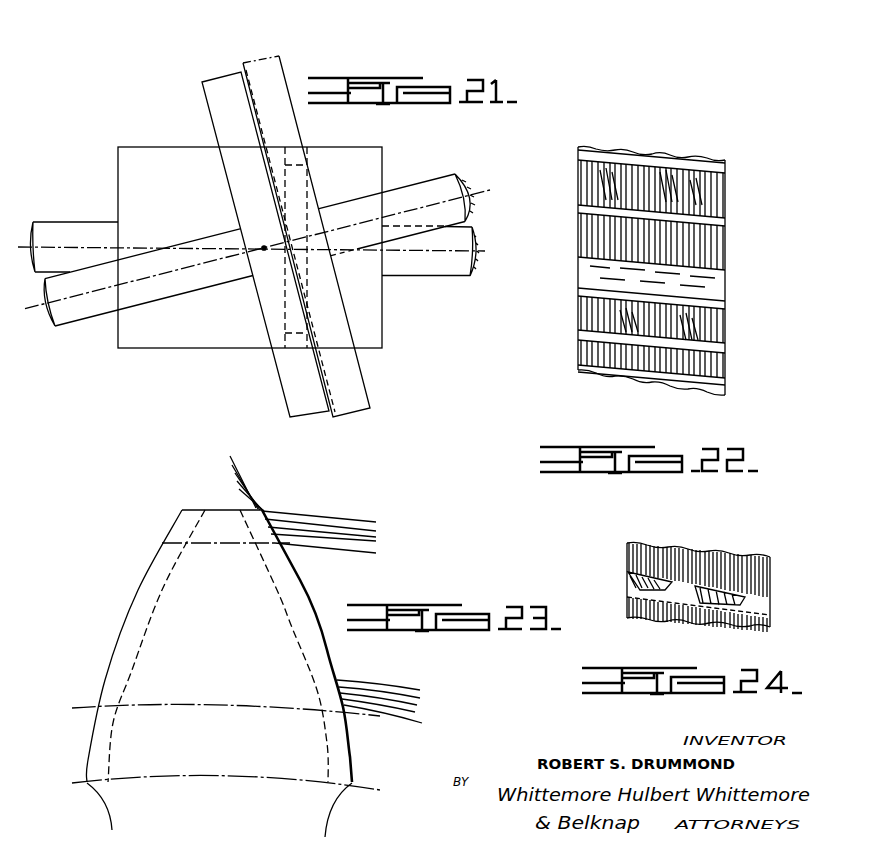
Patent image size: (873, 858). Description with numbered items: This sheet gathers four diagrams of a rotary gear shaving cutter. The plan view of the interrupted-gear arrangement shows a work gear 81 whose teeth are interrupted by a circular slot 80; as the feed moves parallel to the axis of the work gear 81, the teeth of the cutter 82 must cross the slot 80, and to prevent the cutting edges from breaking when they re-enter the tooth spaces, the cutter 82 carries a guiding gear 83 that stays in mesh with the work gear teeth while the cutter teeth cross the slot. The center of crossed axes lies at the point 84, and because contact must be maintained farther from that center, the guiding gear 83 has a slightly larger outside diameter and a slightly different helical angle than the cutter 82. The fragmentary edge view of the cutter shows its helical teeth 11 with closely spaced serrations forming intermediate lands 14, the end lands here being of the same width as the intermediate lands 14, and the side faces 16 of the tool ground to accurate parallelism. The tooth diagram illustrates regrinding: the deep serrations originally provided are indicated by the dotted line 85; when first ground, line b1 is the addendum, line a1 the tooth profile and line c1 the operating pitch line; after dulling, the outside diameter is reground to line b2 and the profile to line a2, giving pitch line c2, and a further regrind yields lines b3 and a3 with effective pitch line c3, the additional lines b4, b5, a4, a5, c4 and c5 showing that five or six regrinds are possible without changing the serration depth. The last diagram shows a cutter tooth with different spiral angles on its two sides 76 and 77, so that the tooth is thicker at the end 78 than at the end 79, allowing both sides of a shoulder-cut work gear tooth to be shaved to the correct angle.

In FIG. 21, the circular slot 80 is at (307, 148).
In FIG. 21, the work gear 81 is at (367, 162).
In FIG. 21, the cutter 82 is at (218, 103).
In FIG. 21, the guiding gear 83 is at (270, 87).
In FIG. 21, the center of crossed axes 84 is at (262, 246).
In FIG. 22, the teeth 11 is at (726, 202).
In FIG. 22, the intermediate lands 14 is at (727, 220).
In FIG. 22, the side faces 16 is at (578, 268).
In FIG. 23, the dotted line 85 is at (297, 633).
In FIG. 23, the tooth profile line a1 is at (229, 474).
In FIG. 23, the reground tooth profile line a2 is at (230, 479).
In FIG. 23, the second reground tooth profile line a3 is at (231, 484).
In FIG. 23, the thread a4 is at (232, 489).
In FIG. 23, the thread a5 is at (233, 494).
In FIG. 23, the addendum line b1 is at (329, 519).
In FIG. 23, the reground addendum line b2 is at (330, 528).
In FIG. 23, the second reground addendum line b3 is at (342, 536).
In FIG. 23, the thread b4 is at (333, 541).
In FIG. 23, the thread b5 is at (335, 551).
In FIG. 23, the operating pitch line c1 is at (388, 688).
In FIG. 23, the reground operating pitch line c2 is at (388, 696).
In FIG. 23, the second reground operating pitch line c3 is at (396, 703).
In FIG. 23, the thread c4 is at (387, 708).
In FIG. 23, the thread c5 is at (391, 717).
In FIG. 24, the one side of the cutter teeth 76 is at (770, 624).
In FIG. 24, the other side of the cutter teeth 77 is at (740, 588).
In FIG. 24, the thicker end of cutter tooth 78 is at (627, 576).
In FIG. 24, the thinner end of cutter tooth 79 is at (770, 604).